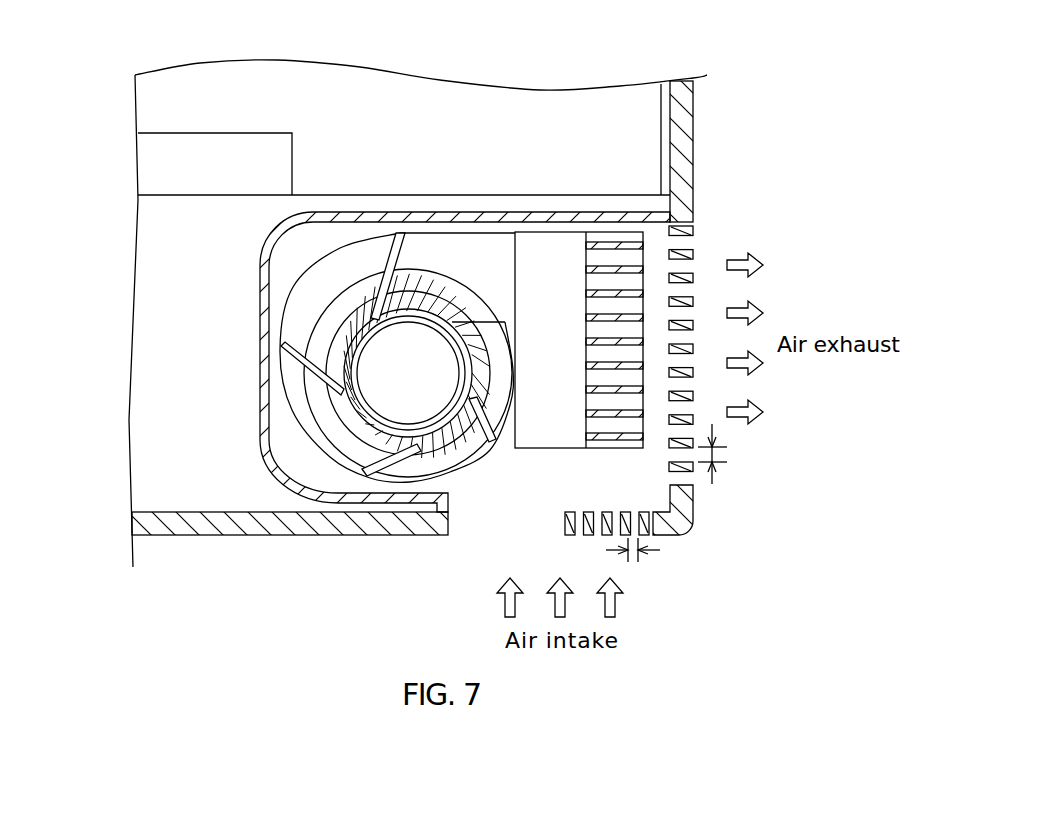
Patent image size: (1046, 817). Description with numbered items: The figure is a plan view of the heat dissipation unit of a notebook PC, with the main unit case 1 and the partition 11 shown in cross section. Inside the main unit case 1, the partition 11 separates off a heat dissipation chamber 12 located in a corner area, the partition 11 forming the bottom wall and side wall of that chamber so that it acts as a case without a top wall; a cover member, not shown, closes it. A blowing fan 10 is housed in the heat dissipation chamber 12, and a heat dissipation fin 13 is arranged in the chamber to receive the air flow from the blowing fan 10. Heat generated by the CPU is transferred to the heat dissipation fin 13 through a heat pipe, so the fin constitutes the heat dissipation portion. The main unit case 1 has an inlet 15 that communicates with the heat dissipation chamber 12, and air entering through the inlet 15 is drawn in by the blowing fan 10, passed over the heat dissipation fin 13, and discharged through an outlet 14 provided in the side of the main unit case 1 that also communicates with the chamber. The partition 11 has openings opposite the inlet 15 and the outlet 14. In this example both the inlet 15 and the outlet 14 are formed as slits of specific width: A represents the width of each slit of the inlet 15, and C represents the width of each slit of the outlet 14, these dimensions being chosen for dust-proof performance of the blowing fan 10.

The main unit case 1 is at (693, 127).
The blowing fan 10 is at (425, 453).
The partition 11 is at (302, 483).
The heat dissipation chamber 12 is at (597, 472).
The heat dissipation fin 13 is at (613, 258).
The outlet 14 is at (708, 240).
The inlet 15 is at (487, 538).
The width of each slit of the inlet A is at (633, 560).
The width of each slit of the outlet C is at (713, 455).